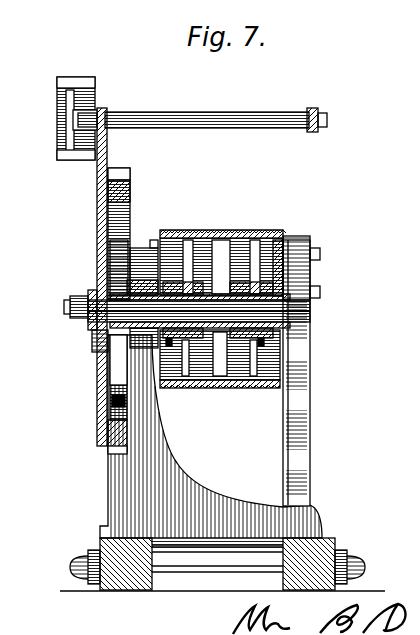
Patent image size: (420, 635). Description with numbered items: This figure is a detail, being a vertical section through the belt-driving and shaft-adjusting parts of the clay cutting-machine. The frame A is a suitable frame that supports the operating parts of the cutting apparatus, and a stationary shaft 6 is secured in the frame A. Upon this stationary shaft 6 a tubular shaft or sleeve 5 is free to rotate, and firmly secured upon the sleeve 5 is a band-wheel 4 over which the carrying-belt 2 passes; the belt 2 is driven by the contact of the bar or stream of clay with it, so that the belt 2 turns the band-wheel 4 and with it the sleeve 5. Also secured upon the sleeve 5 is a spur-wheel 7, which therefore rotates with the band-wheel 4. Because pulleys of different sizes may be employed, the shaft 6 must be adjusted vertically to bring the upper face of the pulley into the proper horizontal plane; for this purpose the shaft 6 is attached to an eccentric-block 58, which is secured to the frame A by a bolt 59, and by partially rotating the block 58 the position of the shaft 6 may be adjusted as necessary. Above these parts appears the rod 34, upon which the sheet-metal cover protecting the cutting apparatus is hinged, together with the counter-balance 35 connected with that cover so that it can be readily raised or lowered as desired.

The carrying-belt 2 is at (254, 387).
The band-wheel 4 is at (283, 242).
The tubular shaft or sleeve 5 is at (272, 293).
The stationary shaft 6 is at (298, 316).
The spur-wheel 7 is at (128, 188).
The rod 34 is at (232, 121).
The counter-balance 35 is at (95, 86).
The eccentric-block 58 is at (90, 326).
The bolt 59 is at (70, 312).
The frame A is at (100, 352).